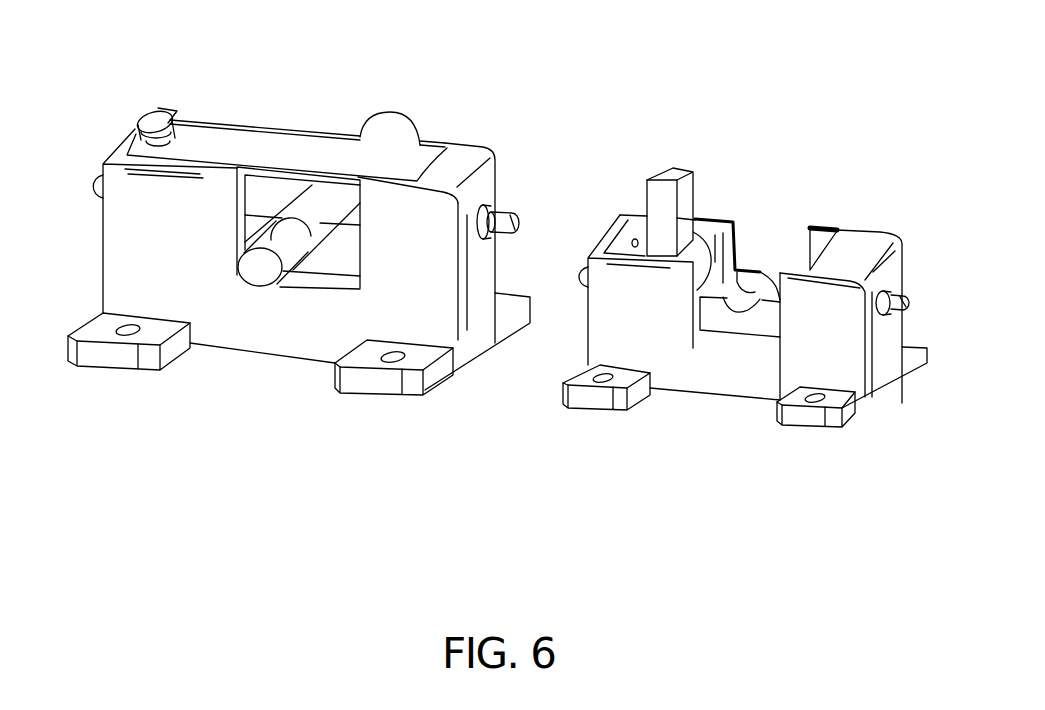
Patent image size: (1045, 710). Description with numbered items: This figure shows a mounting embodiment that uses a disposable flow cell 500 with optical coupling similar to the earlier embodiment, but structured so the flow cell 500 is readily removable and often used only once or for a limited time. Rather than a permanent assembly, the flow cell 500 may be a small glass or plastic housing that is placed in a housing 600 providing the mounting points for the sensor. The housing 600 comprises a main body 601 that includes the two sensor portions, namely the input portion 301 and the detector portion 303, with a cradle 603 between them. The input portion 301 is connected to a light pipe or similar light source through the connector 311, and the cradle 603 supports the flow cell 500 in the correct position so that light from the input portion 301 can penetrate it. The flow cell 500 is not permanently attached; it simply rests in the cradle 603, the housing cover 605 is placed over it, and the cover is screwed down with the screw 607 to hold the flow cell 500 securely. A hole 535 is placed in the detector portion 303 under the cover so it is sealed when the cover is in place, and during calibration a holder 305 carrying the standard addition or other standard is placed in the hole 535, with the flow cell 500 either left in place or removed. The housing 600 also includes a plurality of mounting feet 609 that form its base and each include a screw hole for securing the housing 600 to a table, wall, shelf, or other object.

The housing 600 is at (440, 210).
The main body 601 is at (117, 278).
The cradle 603 is at (330, 252).
The housing cover 605 is at (258, 148).
The screw 607 is at (152, 108).
The mounting feet 609 is at (101, 358).
The flow cell 500 is at (258, 273).
The connector 311 is at (507, 210).
The input portion 301 is at (867, 247).
The detector portion 303 is at (640, 235).
The holder 305 is at (672, 175).
The hole 535 is at (697, 335).